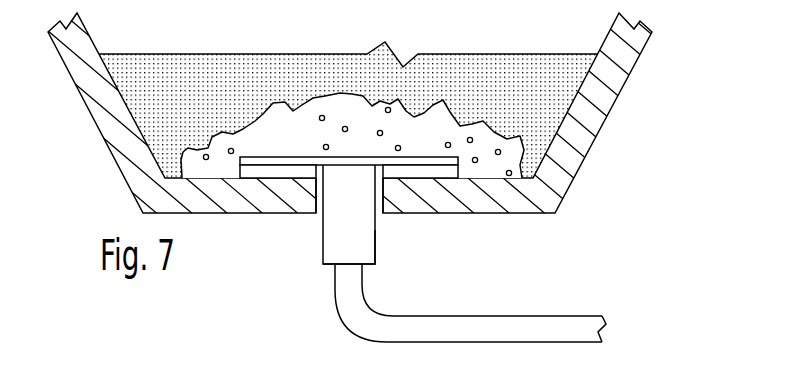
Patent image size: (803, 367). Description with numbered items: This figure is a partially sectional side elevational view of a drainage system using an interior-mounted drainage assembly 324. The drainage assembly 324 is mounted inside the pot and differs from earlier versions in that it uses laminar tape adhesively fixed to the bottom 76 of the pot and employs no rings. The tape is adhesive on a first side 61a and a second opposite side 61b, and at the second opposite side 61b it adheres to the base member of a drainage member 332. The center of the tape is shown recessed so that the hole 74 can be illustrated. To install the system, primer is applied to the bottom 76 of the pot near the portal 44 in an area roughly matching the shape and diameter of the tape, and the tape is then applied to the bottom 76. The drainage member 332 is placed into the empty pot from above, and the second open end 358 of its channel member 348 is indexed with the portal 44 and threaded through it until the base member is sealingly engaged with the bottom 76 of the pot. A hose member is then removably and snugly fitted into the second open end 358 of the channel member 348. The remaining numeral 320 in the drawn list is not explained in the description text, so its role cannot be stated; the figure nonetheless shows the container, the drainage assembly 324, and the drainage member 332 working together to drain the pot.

The container / tank 320 is at (580, 204).
The drainage assembly 324 is at (443, 253).
The drainage member 332 is at (402, 233).
The portal 44 is at (387, 203).
The hole 74 is at (318, 178).
The bottom 76 is at (422, 177).
The first side 61a is at (283, 180).
The second opposite side 61b is at (285, 165).
The channel member 348 is at (368, 252).
The second open end 358 is at (322, 265).